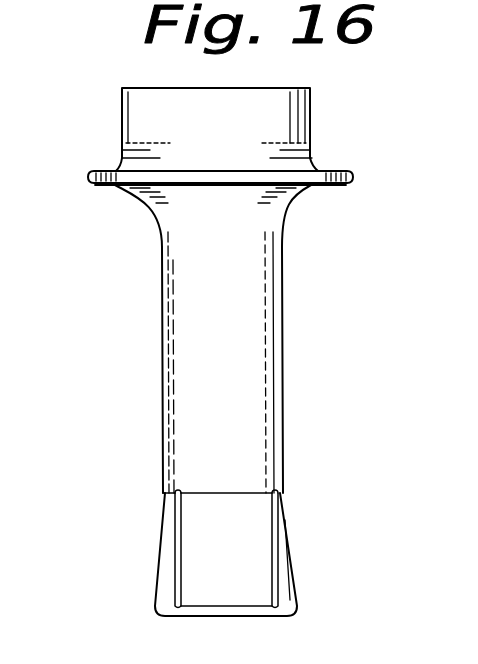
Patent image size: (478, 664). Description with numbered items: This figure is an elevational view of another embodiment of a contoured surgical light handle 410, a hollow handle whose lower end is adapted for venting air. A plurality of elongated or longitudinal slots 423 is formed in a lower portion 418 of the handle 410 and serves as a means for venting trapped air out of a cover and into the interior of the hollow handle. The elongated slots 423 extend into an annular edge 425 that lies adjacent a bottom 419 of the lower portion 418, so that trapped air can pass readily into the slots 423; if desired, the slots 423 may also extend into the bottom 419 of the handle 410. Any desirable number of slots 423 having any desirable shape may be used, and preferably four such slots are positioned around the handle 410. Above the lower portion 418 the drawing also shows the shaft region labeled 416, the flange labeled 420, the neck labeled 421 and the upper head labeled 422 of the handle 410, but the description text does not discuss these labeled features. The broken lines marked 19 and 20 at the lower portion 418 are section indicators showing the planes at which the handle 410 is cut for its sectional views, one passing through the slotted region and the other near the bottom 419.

The contoured surgical light handle 410 is at (233, 365).
The shaft 416 is at (173, 322).
The lower portion 418 is at (272, 569).
The bottom 419 is at (200, 617).
The flange 420 is at (122, 178).
The neck 421 is at (306, 187).
The head / cap 422 is at (297, 105).
The elongated slots 423 is at (181, 515).
The annular edge 425 is at (246, 607).
The section line 19- 19 is at (148, 617).
The section line 20- 20 is at (151, 512).